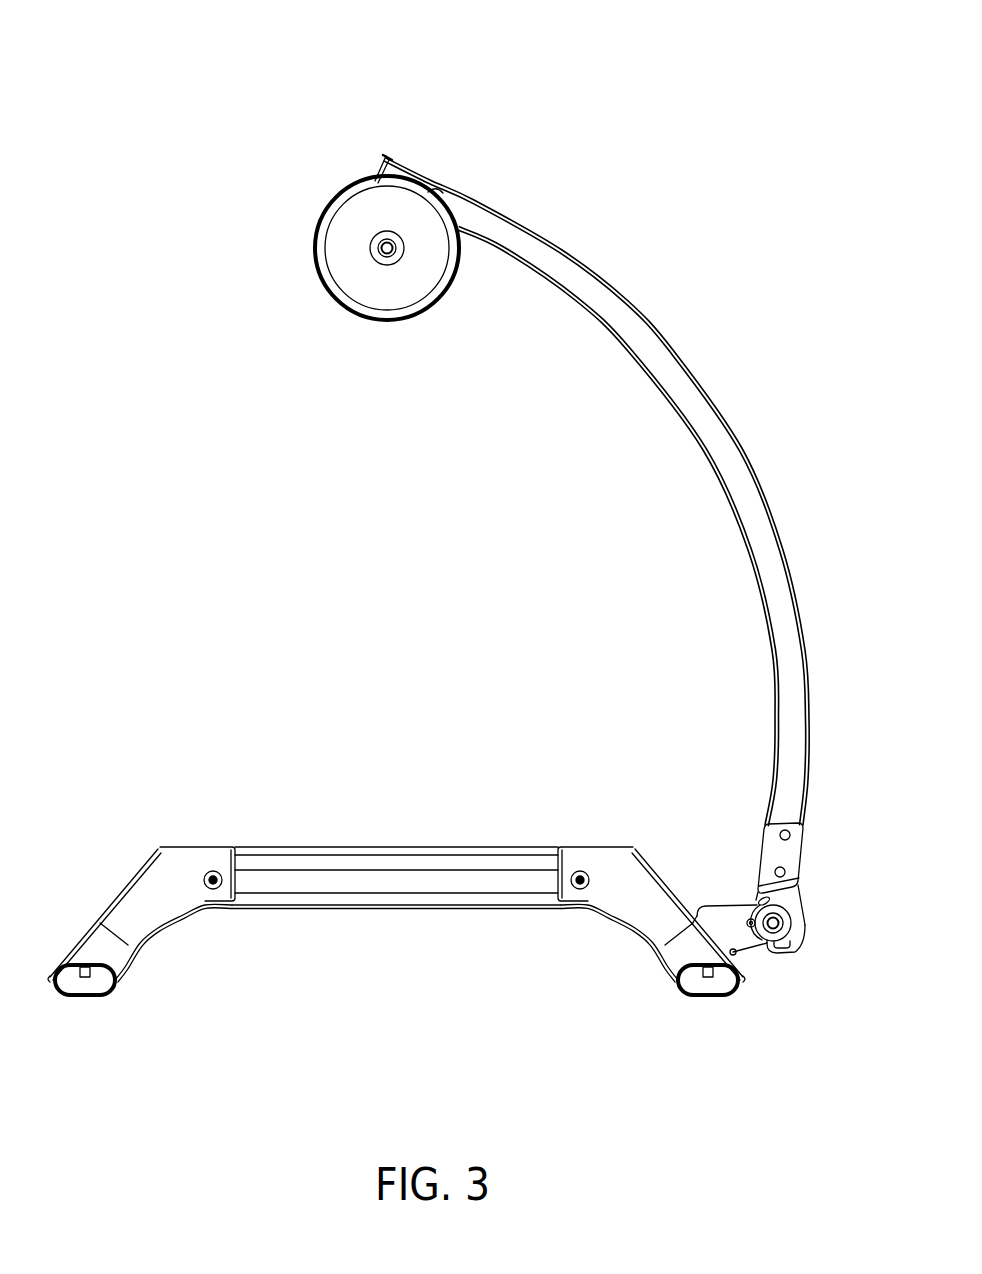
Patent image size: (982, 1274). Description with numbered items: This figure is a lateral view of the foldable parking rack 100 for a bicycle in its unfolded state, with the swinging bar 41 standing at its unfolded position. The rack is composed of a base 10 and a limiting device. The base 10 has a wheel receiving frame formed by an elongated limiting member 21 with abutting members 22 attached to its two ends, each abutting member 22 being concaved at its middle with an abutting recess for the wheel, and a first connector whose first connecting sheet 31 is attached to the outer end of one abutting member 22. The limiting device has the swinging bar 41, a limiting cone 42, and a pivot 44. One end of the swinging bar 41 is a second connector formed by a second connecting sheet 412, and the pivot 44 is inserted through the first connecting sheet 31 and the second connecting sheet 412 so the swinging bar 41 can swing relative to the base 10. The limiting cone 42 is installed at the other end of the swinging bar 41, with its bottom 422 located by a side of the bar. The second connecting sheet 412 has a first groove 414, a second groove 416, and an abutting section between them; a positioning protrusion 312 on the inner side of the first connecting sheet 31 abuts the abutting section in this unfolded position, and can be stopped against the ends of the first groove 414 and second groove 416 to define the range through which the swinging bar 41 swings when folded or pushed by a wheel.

The foldable parking rack 100 is at (189, 45).
The limiting cone 42 is at (333, 205).
The bottom 422 is at (328, 280).
The swinging bar 41 is at (742, 440).
The second connecting sheet 412 is at (797, 905).
The first groove 414 is at (750, 919).
The second groove 416 is at (764, 950).
The pivot 44 is at (784, 923).
The base 10 is at (182, 822).
The abutting member 22 is at (120, 878).
The elongated limiting member 21 is at (390, 880).
The first connecting sheet 31 is at (710, 903).
The positioning protrusion 312 is at (725, 903).